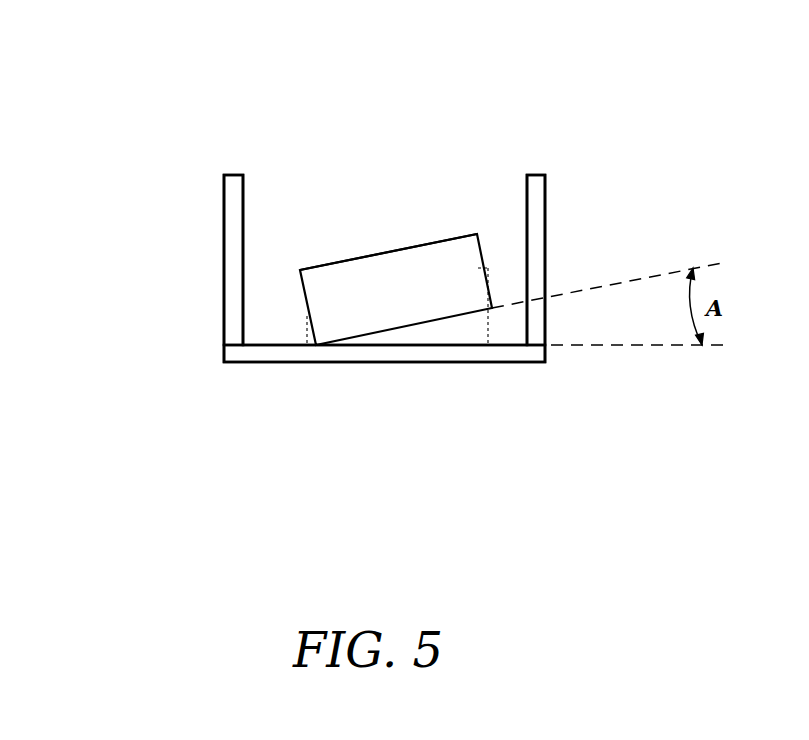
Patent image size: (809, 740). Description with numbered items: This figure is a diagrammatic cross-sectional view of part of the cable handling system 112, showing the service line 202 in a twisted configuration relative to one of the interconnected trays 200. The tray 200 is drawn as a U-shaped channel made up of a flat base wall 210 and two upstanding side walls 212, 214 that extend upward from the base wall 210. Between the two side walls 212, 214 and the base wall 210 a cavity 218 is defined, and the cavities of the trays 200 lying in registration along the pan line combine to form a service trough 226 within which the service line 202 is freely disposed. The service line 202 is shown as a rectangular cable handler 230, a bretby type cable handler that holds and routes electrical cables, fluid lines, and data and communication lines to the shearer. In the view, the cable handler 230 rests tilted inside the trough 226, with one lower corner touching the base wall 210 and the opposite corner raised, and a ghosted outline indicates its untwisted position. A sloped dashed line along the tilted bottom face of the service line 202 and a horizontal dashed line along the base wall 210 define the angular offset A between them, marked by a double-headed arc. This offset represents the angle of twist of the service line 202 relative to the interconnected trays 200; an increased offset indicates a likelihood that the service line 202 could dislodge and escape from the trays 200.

The cable handling system 112 is at (697, 88).
The interconnected trays 200 is at (223, 193).
The service line 202 is at (372, 255).
The base wall 210 is at (423, 362).
The side wall 212 is at (545, 243).
The side wall 214 is at (223, 245).
The cavity 218 is at (424, 207).
The service trough 226 is at (387, 168).
The cable handler 230 is at (463, 233).